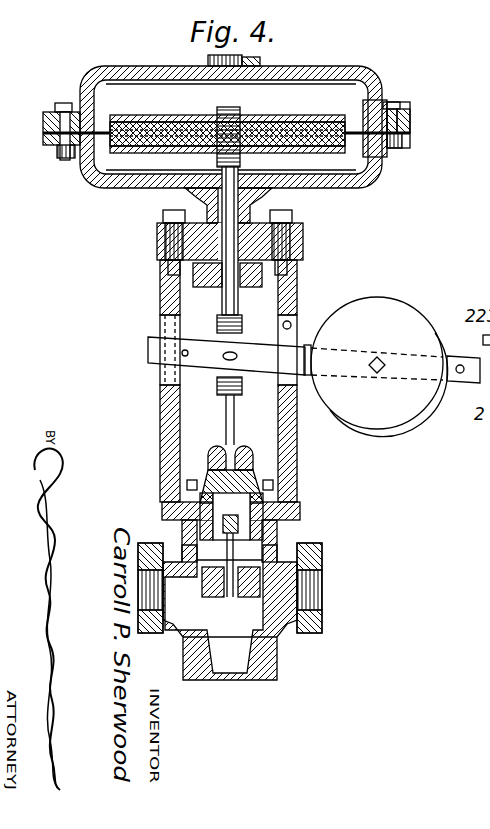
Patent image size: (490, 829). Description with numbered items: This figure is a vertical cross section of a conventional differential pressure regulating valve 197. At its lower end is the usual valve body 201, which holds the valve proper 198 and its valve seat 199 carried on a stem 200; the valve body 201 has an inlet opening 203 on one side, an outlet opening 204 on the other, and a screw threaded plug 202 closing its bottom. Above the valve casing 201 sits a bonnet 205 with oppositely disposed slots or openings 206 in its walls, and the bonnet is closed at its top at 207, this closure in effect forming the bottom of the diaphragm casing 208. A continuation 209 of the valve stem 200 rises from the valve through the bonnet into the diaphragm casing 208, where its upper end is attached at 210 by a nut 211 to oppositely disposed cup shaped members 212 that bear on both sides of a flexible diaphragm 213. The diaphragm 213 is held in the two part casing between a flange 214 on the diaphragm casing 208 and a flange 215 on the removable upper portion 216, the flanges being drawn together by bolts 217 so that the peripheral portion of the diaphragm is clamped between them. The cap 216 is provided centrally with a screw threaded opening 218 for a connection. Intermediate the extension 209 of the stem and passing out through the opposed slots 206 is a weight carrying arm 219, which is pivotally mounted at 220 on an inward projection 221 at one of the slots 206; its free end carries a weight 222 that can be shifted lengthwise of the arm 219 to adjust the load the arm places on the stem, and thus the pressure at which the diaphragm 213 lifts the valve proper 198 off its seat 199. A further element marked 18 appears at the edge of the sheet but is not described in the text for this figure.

The connection 18 is at (489, 495).
The differential pressure regulating valve 197 is at (299, 289).
The valve proper 198 is at (258, 575).
The valve seat 199 is at (318, 556).
The stem 200 is at (236, 432).
The valve body 201 is at (287, 625).
The screw threaded plug 202 is at (226, 679).
The inlet opening 203 is at (182, 548).
The outlet opening 204 is at (320, 585).
The bonnet 205 is at (162, 412).
The slots or openings 206 is at (180, 320).
The top of bonnet 207 is at (296, 232).
The diaphragm casing 208 is at (367, 170).
The continuation of the valve stem 209 is at (222, 297).
The attachment point 210 is at (206, 122).
The nut 211 is at (240, 106).
The cup shaped members 212 is at (110, 150).
The flexible diaphragm 213 is at (371, 115).
The flange 214 is at (406, 108).
The flange 215 is at (411, 140).
The removable upper portion 216 is at (335, 67).
The bolts 217 is at (72, 160).
The screw threaded opening 218 is at (206, 55).
The weight carrying arm 219 is at (265, 338).
The pivot 220 is at (183, 355).
The inward projection 221 is at (214, 393).
The weight 222 is at (398, 427).